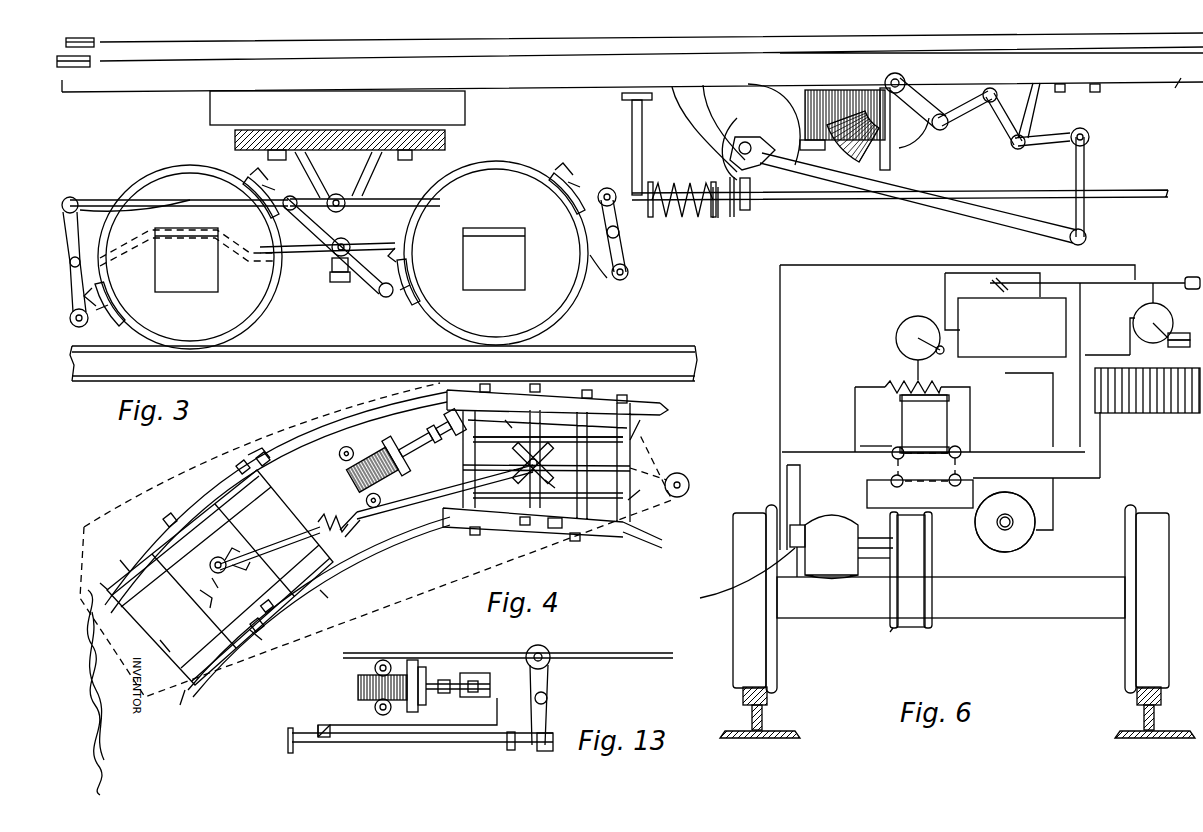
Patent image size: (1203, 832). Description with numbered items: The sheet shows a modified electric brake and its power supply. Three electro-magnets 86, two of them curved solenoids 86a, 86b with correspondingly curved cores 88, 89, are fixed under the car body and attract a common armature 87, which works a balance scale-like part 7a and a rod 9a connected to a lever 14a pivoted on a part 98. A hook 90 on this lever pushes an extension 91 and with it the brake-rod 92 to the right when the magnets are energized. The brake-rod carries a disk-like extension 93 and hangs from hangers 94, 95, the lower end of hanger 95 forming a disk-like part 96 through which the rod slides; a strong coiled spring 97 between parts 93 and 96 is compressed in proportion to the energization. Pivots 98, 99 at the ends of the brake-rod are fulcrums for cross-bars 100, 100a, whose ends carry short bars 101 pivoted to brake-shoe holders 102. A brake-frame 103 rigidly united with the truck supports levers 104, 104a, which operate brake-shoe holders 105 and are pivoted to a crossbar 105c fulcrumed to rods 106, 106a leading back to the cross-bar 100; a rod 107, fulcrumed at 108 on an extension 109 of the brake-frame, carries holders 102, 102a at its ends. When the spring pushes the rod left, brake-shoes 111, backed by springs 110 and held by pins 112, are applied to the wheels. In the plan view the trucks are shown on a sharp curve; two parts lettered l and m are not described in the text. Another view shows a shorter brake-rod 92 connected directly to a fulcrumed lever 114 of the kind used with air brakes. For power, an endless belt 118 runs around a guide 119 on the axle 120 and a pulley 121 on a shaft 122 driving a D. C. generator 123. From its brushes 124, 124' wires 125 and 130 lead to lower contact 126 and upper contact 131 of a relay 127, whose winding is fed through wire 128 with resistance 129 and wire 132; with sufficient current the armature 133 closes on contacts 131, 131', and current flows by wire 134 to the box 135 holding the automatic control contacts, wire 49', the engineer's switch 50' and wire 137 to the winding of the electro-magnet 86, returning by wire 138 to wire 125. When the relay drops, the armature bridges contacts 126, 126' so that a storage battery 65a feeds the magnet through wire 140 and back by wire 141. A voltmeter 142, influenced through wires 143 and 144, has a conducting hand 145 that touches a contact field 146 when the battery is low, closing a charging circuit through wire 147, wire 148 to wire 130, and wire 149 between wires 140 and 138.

In FIG. 3, the balance scale-like part 7a is at (1080, 128).
In FIG. 4, the balance scale-like part 7a is at (445, 456).
In FIG. 3, the rod 9a is at (1085, 170).
In FIG. 3, the lever 14a is at (972, 214).
In FIG. 4, the lever 14a is at (410, 505).
In FIG. 13, the lever 14a is at (408, 728).
In FIG. 6, the wire 49' is at (966, 301).
In FIG. 6, the engineer's switch 50' is at (902, 347).
In FIG. 6, the storage battery 65a is at (1158, 412).
In FIG. 3, the electro-magnet 86 is at (830, 92).
In FIG. 4, the electro-magnet 86 is at (358, 468).
In FIG. 6, the electro-magnet 86 is at (1005, 522).
In FIG. 13, the electro-magnet 86 is at (380, 672).
In FIG. 3, the curved solenoid 86a is at (852, 140).
In FIG. 4, the curved solenoid 86a is at (372, 480).
In FIG. 4, the curved solenoid 86b is at (372, 452).
In FIG. 3, the common armature 87 is at (937, 115).
In FIG. 4, the common armature 87 is at (418, 460).
In FIG. 3, the curved core 88 is at (915, 144).
In FIG. 3, the curved core 89 is at (736, 120).
In FIG. 3, the hook 90 is at (748, 175).
In FIG. 3, the extension 91 is at (760, 200).
In FIG. 3, the brake-rod 92 is at (835, 200).
In FIG. 4, the brake-rod 92 is at (490, 478).
In FIG. 13, the brake-rod 92 is at (350, 745).
In FIG. 3, the disk-like extension 93 is at (670, 218).
In FIG. 3, the hanger 94 is at (632, 140).
In FIG. 3, the hanger 95 is at (700, 135).
In FIG. 3, the disk-like part 96 is at (715, 222).
In FIG. 3, the coiled spring 97 is at (730, 218).
In FIG. 4, the coiled spring 97 is at (326, 520).
In FIG. 3, the pivot part 98 is at (770, 110).
In FIG. 4, the pivot part 98 is at (240, 554).
In FIG. 4, the brake-rod end pivot 99 is at (525, 460).
In FIG. 3, the cross-bar 100 is at (356, 208).
In FIG. 4, the cross-bar 100 is at (210, 567).
In FIG. 4, the cross-bar 100a is at (560, 435).
In FIG. 3, the short bar 101 is at (335, 194).
In FIG. 4, the short bar 101 is at (168, 512).
In FIG. 3, the brake-shoe holder 102 is at (270, 180).
In FIG. 3, the brake-shoe holder 102a is at (388, 298).
In FIG. 4, the brake-shoe holder 102a is at (554, 530).
In FIG. 3, the brake-frame 103 is at (92, 228).
In FIG. 4, the brake-frame 103 is at (122, 562).
In FIG. 3, the lever 104 is at (626, 252).
In FIG. 4, the lever 104 is at (262, 453).
In FIG. 3, the lever 104a is at (90, 200).
In FIG. 3, the brake-shoe holder 105 is at (605, 188).
In FIG. 4, the brake-shoe holder 105 is at (240, 462).
In FIG. 3, the crossbar 105c is at (66, 198).
In FIG. 4, the crossbar 105c is at (262, 462).
In FIG. 3, the rod 106 is at (470, 174).
In FIG. 4, the rod 106 is at (110, 583).
In FIG. 3, the rod 106a is at (118, 212).
In FIG. 4, the rod 106a is at (205, 680).
In FIG. 3, the rod 107 is at (360, 268).
In FIG. 4, the rod 107 is at (256, 633).
In FIG. 3, the fulcrum 108 is at (342, 284).
In FIG. 4, the fulcrum 108 is at (268, 608).
In FIG. 4, the extension 109 is at (235, 588).
In FIG. 3, the spring 110 is at (262, 188).
In FIG. 3, the brake-shoe 111 is at (560, 198).
In FIG. 4, the brake-shoe 111 is at (104, 584).
In FIG. 3, the pin 112 is at (252, 176).
In FIG. 13, the fulcrumed lever 114 is at (550, 695).
In FIG. 6, the endless belt 118 is at (911, 570).
In FIG. 6, the guide 119 is at (892, 626).
In FIG. 6, the axle 120 is at (951, 597).
In FIG. 6, the pulley 121 is at (880, 558).
In FIG. 6, the shaft 122 is at (870, 538).
In FIG. 6, the generator 123 is at (831, 547).
In FIG. 6, the current collecting brush 124 is at (808, 530).
In FIG. 6, the current collecting brush 124' is at (733, 578).
In FIG. 6, the wire 125 is at (800, 490).
In FIG. 6, the contact 126 is at (885, 492).
In FIG. 6, the contact 126' is at (978, 473).
In FIG. 6, the relay 127 is at (924, 424).
In FIG. 6, the wire 128 is at (855, 392).
In FIG. 6, the resistance 129 is at (912, 379).
In FIG. 6, the wire 130 is at (780, 480).
In FIG. 6, the contact 131 is at (886, 437).
In FIG. 6, the contact 131' is at (974, 445).
In FIG. 6, the wire 132 is at (860, 446).
In FIG. 6, the relay armature 133 is at (920, 470).
In FIG. 6, the wire 134 is at (1080, 310).
In FIG. 6, the box 135 is at (1012, 327).
In FIG. 6, the wire 137 is at (1007, 375).
In FIG. 6, the wire 138 is at (867, 500).
In FIG. 6, the wire 140 is at (1100, 478).
In FIG. 6, the wire 141 is at (1100, 444).
In FIG. 6, the voltmeter 142 is at (1168, 320).
In FIG. 6, the wire 143 is at (1111, 351).
In FIG. 6, the wire 144 is at (1130, 340).
In FIG. 6, the hand 145 is at (1153, 318).
In FIG. 6, the contact field 146 is at (1172, 344).
In FIG. 6, the wire 147 is at (1181, 336).
In FIG. 6, the wire 148 is at (1137, 272).
In FIG. 6, the wire 149 is at (975, 512).
In FIG. 3, the strut l is at (305, 165).
In FIG. 4, the strut l is at (212, 580).
In FIG. 3, the strut m is at (370, 172).
In FIG. 4, the strut m is at (240, 568).